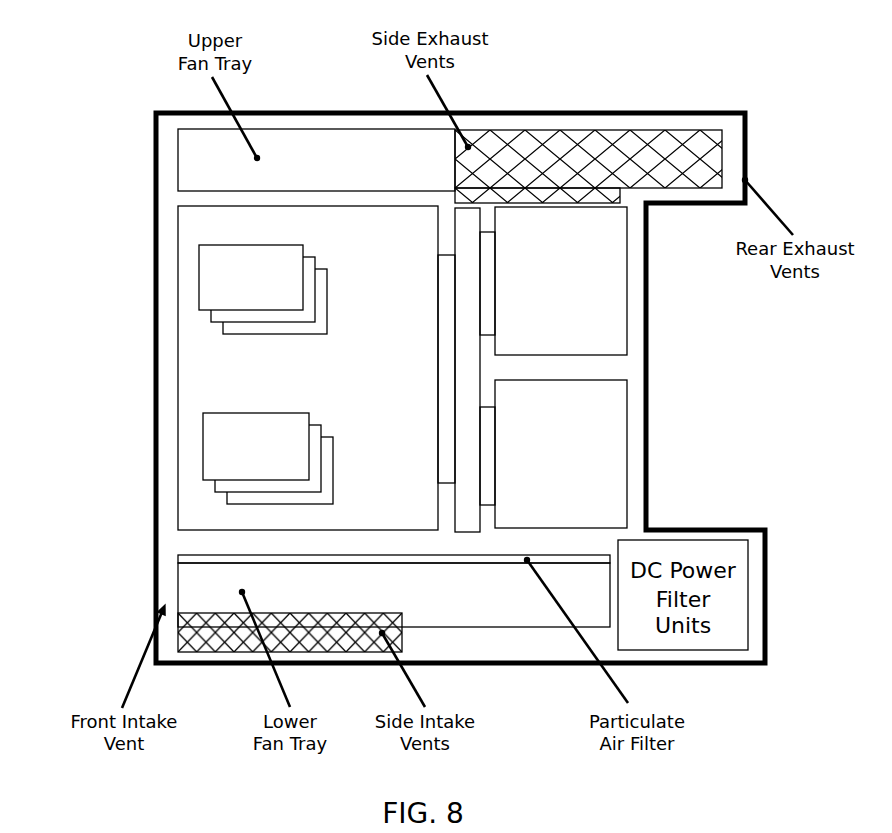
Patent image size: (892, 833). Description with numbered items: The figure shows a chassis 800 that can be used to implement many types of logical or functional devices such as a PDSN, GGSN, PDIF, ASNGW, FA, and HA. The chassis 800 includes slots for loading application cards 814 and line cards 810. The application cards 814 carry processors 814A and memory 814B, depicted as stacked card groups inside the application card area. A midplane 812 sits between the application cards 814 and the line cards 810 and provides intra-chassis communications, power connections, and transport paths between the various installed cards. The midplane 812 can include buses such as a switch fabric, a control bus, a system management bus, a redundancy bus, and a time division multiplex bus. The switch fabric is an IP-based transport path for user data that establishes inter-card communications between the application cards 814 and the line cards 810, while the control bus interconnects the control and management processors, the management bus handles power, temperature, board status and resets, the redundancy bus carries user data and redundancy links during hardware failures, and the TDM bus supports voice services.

The chassis 800 is at (388, 373).
The line cards 810 is at (638, 306).
The midplane 812 is at (474, 544).
The application cards 814 is at (238, 368).
The processor 814A is at (344, 317).
The memory 814B is at (344, 470).